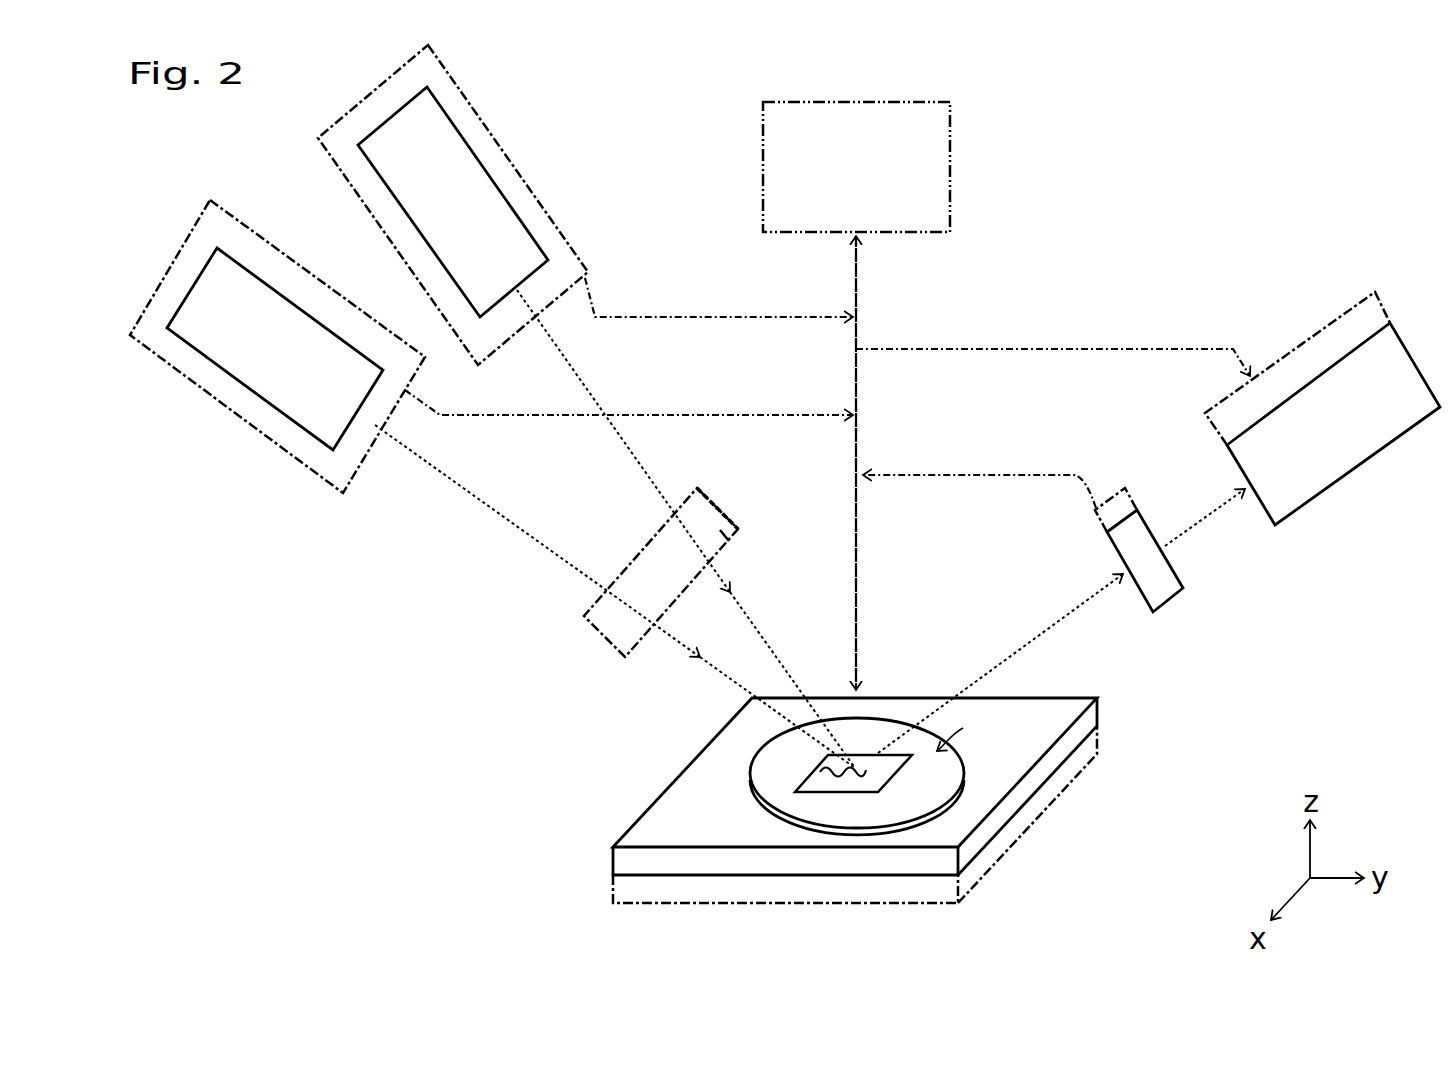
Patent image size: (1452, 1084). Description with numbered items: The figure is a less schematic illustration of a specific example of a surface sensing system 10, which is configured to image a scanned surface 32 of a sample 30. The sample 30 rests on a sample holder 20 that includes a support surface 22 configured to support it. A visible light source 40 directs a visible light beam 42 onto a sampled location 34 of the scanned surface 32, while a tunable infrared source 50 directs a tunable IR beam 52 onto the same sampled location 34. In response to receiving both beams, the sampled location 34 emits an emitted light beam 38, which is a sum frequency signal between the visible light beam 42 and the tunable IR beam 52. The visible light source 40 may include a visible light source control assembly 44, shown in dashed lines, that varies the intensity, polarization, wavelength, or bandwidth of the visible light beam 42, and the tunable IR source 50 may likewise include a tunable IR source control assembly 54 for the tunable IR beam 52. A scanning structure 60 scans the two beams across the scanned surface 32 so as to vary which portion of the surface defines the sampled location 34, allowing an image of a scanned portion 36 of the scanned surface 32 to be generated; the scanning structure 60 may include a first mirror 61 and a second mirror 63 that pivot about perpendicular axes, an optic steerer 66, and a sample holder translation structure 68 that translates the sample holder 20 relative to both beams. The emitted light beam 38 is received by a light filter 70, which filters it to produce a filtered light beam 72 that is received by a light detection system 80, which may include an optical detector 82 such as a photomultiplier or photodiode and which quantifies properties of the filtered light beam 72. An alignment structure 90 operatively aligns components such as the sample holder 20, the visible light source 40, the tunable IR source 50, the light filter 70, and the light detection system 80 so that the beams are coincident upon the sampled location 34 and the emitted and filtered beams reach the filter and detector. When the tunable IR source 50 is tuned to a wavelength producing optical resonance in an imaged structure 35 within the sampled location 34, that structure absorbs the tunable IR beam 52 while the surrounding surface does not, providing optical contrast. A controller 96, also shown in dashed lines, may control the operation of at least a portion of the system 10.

The surface sensing system 10 is at (1350, 98).
The sample holder 20 is at (965, 876).
The support surface 22 is at (1052, 712).
The sample 30 is at (969, 779).
The scanned surface 32 is at (967, 735).
The sampled location 34 is at (865, 792).
The imaged structure 35 is at (825, 772).
The scanned portion 36 is at (833, 792).
The emitted light beam 38 is at (1048, 628).
The visible light source 40 is at (226, 372).
The visible light beam 42 is at (492, 509).
The visible light source control assembly 44 is at (223, 310).
The tunable infrared source 50 is at (405, 210).
The tunable IR beam 52 is at (632, 458).
The tunable IR source control assembly 54 is at (413, 155).
The scanning structure 60 is at (520, 168).
The first mirror 61 is at (697, 488).
The second mirror 63 is at (722, 520).
The optic steerer 66 is at (731, 540).
The sample holder translation structure 68 is at (632, 887).
The light filter 70 is at (1163, 600).
The filtered light beam 72 is at (1203, 515).
The light detection system 80 is at (1293, 392).
The optical detector 82 is at (1383, 383).
The alignment structure 90 is at (586, 273).
The controller 96 is at (840, 183).